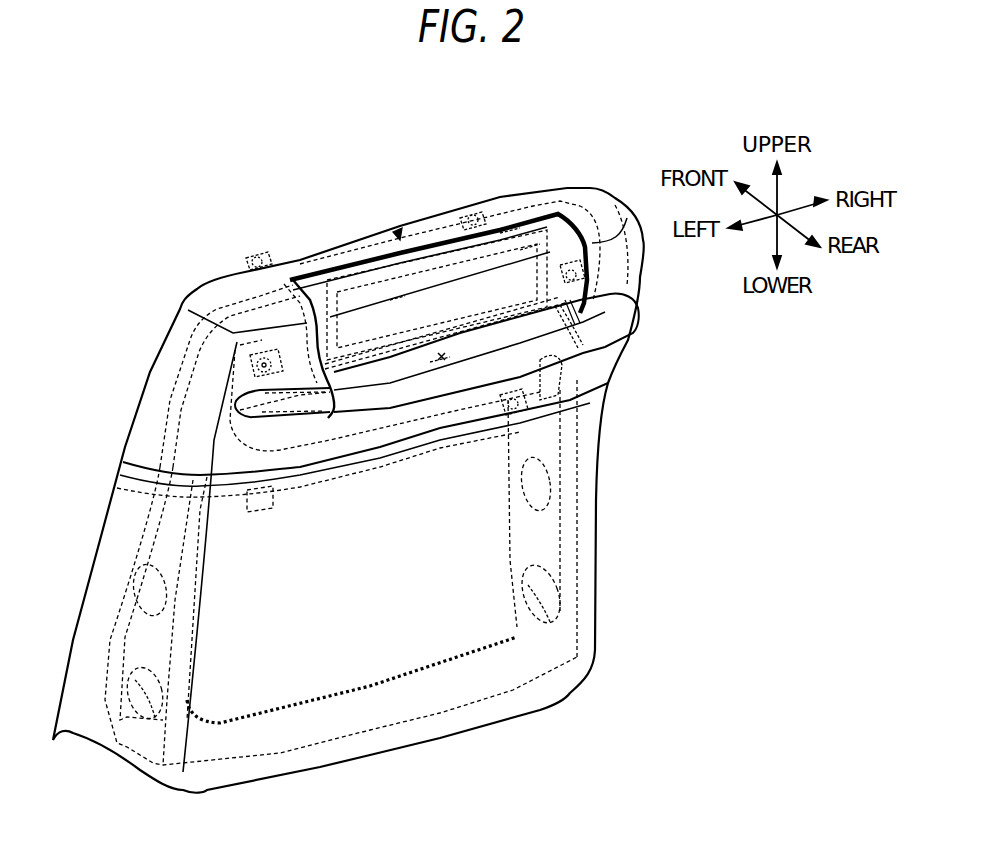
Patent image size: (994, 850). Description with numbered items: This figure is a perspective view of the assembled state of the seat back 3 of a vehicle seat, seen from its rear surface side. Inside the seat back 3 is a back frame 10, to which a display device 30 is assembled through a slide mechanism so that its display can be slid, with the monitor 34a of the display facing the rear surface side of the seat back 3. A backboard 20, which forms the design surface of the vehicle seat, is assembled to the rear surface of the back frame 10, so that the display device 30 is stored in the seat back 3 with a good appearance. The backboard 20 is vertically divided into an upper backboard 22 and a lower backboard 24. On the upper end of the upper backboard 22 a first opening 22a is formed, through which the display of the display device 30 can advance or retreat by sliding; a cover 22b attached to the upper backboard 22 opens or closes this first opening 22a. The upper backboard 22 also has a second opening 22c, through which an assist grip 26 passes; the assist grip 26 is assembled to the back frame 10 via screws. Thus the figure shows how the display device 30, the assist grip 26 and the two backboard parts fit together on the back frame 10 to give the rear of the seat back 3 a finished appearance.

The seat back 3 is at (148, 328).
The back frame 10 is at (387, 697).
The backboard 20 is at (421, 492).
The upper backboard 22 is at (603, 360).
The first opening 22a is at (510, 240).
The cover 22b is at (530, 247).
The second opening 22c is at (440, 362).
The lower backboard 24 is at (697, 380).
The assist grip 26 is at (473, 378).
The display device 30 is at (397, 235).
The monitor 34a is at (397, 307).